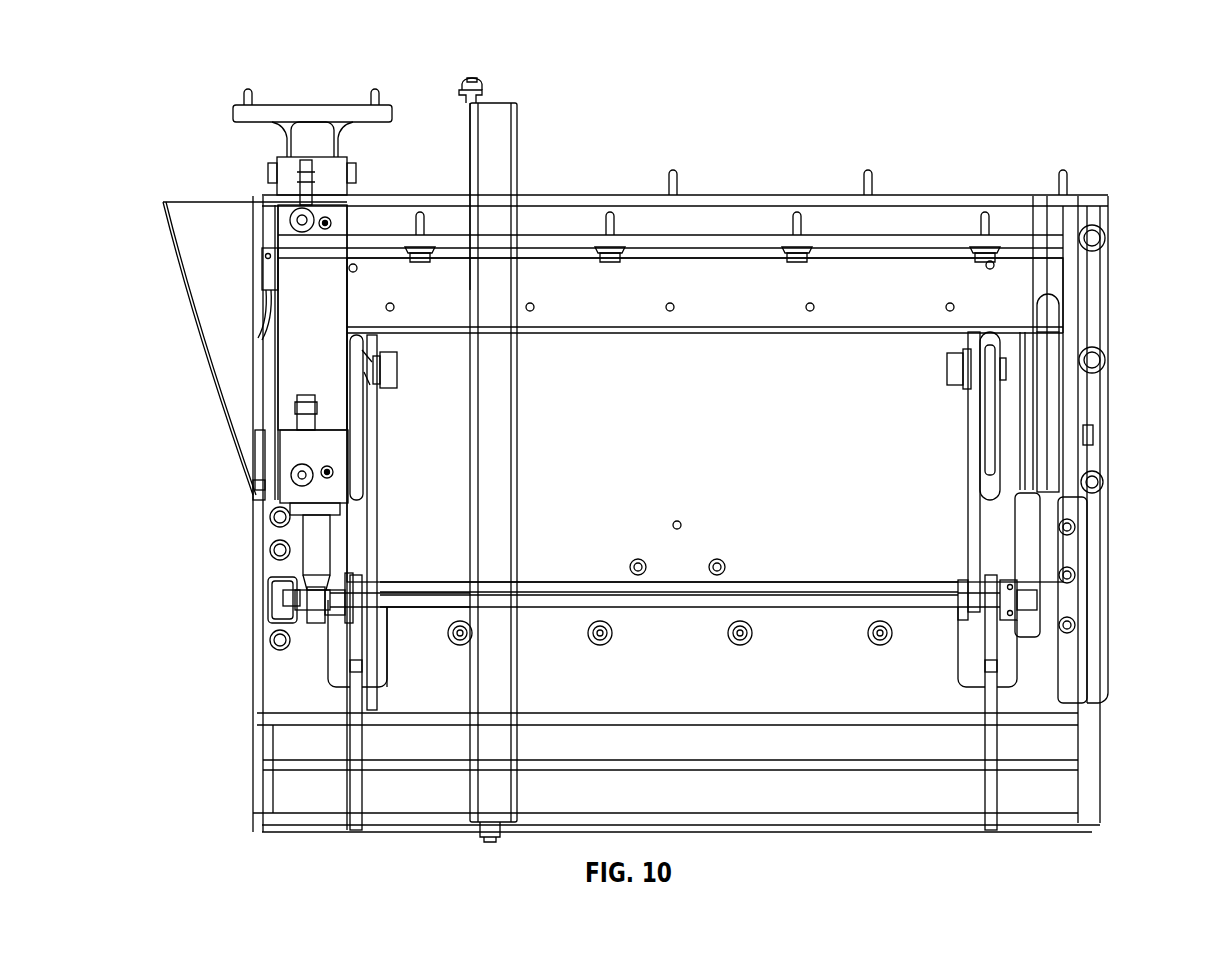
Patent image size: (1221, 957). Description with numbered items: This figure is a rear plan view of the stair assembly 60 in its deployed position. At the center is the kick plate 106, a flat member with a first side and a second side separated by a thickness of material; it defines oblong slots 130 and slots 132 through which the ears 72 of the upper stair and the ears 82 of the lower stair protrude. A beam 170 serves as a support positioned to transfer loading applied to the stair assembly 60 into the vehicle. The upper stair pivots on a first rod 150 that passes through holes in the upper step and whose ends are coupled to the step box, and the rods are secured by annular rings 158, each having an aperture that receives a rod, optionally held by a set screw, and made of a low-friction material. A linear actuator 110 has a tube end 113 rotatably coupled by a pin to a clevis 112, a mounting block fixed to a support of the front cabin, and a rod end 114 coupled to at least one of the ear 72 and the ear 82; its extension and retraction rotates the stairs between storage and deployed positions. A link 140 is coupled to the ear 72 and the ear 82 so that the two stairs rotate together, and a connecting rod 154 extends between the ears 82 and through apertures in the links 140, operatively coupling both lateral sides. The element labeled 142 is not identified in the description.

The stair assembly 60 is at (160, 77).
The ear 72 is at (368, 355).
The ear 82 is at (360, 580).
The kick plate 106 is at (738, 438).
The linear actuator 110 is at (300, 380).
The clevis 112 is at (308, 112).
The tube end 113 is at (333, 208).
The rod end 114 is at (270, 641).
The slot 130 is at (358, 493).
The slot 132 is at (365, 652).
The link 140 is at (372, 535).
The bar 142 is at (962, 515).
The first rod 150 is at (255, 453).
The connecting rod 154 is at (803, 600).
The annular ring 158 is at (252, 490).
The beam 170 is at (505, 143).